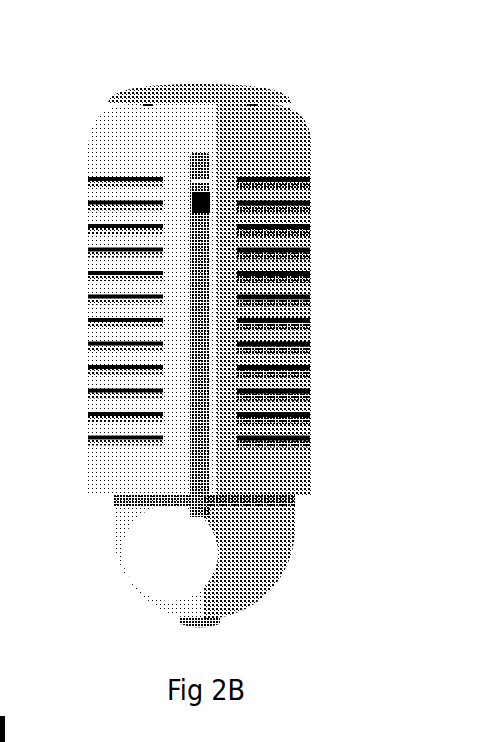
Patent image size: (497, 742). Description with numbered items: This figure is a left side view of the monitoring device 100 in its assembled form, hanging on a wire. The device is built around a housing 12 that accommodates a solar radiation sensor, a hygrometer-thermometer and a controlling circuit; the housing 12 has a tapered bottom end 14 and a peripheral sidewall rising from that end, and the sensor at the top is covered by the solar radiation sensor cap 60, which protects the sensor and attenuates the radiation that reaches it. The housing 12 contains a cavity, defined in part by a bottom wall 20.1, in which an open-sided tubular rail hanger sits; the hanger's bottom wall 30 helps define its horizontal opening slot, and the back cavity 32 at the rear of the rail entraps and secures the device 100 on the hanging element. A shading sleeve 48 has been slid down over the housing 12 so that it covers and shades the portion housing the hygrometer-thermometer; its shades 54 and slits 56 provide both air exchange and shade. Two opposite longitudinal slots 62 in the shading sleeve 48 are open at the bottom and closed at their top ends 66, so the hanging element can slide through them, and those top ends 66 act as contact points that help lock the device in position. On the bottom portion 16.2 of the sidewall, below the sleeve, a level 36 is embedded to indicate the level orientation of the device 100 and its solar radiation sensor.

The monitoring device 100 is at (264, 33).
The solar radiation sensor cap 60 is at (170, 88).
The closed top end of slot 66 is at (203, 156).
The back cavity 32 is at (202, 182).
The bottom wall of hanger 30 is at (196, 196).
The bottom wall of cavity 20.1 is at (200, 228).
The bottom portion of sidewall 16.2 is at (200, 340).
The slots 62 is at (200, 460).
The housing 12 is at (103, 540).
The tapered bottom end 14 is at (145, 607).
The shades 54 is at (290, 285).
The slits 56 is at (297, 345).
The shading sleeve 48 is at (323, 406).
The level 36 is at (298, 502).